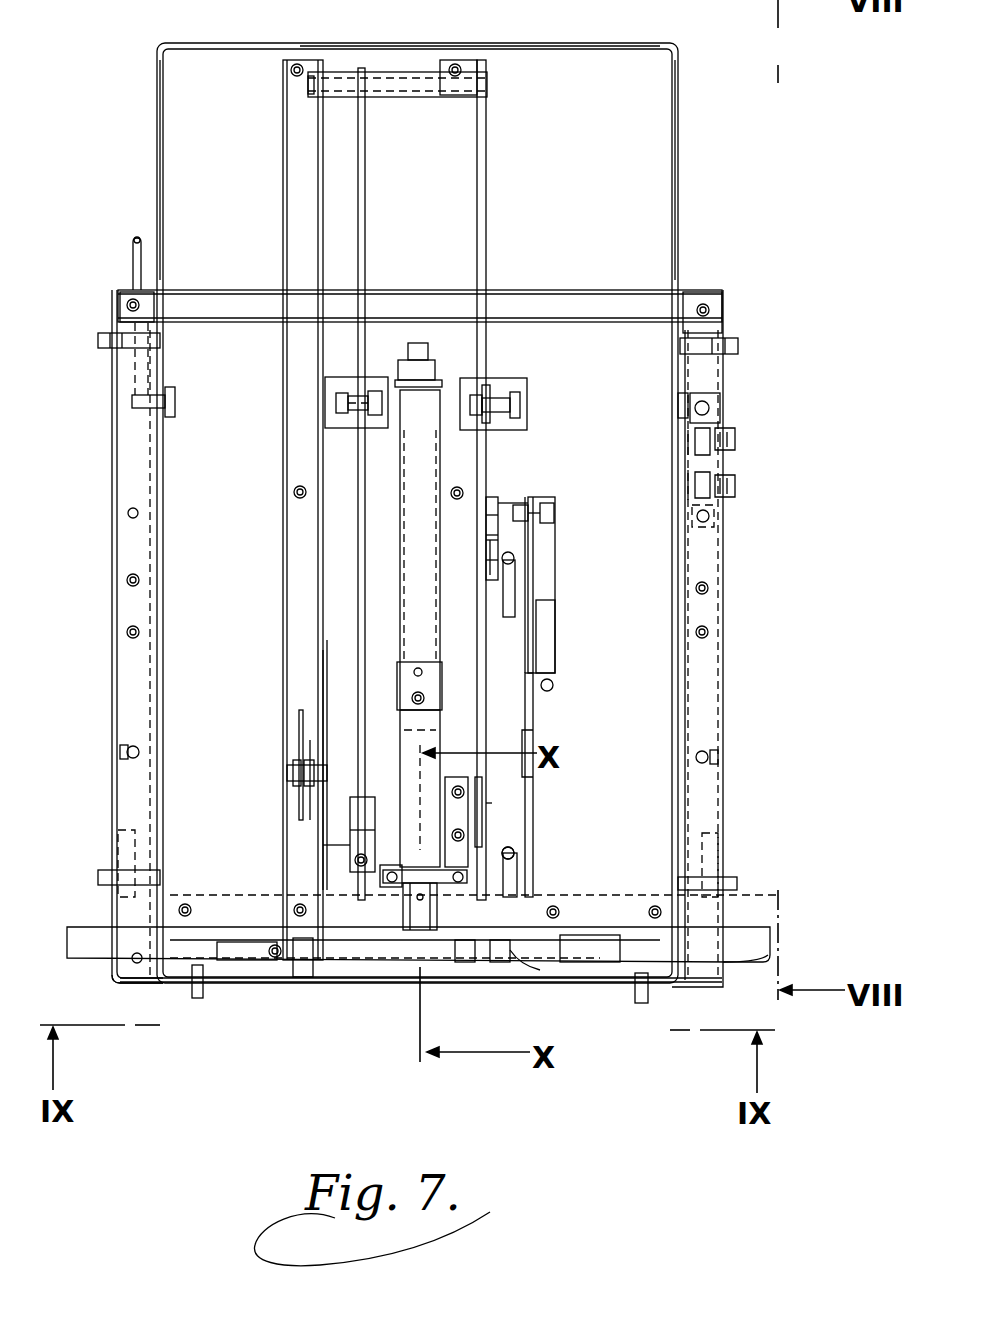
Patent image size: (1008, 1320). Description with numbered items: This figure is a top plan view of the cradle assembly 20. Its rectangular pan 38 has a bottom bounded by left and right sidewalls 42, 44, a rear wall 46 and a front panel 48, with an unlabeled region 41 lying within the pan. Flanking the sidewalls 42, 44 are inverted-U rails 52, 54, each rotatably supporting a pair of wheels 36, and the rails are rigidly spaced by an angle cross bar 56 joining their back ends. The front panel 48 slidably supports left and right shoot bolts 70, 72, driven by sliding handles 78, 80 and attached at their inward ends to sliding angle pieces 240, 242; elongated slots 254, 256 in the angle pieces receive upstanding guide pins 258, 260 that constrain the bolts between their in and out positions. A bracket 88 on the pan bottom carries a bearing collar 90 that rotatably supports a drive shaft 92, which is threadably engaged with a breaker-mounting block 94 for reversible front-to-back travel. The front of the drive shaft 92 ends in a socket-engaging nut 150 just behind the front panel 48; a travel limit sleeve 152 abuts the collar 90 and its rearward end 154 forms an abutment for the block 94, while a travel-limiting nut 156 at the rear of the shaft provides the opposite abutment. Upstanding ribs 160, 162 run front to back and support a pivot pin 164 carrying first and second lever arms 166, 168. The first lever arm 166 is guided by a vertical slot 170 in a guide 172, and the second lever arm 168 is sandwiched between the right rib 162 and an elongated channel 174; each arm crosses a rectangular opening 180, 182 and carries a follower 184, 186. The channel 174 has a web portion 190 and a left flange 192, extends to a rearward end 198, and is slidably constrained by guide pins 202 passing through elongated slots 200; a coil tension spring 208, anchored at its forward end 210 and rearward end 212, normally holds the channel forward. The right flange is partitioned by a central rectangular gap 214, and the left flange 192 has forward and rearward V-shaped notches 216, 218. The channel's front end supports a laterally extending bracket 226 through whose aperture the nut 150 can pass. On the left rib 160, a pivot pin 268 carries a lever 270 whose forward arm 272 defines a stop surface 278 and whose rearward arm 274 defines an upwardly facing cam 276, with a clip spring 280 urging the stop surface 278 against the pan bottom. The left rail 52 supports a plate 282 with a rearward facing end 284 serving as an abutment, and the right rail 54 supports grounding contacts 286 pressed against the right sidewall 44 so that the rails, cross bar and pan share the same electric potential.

The cradle assembly 20 is at (724, 181).
The wheels 36 is at (125, 823).
The rectangular pan 38 is at (668, 52).
The top panel 41 is at (585, 65).
The sidewall 42 is at (163, 141).
The sidewall 44 is at (672, 143).
The rear wall 46 is at (512, 48).
The front panel 48 is at (145, 985).
The rail 52 is at (112, 643).
The rail 54 is at (723, 643).
The angle cross bar 56 is at (540, 295).
The shoot bolt 70 is at (100, 950).
The shoot bolt 72 is at (745, 958).
The sliding handle 78 is at (195, 1000).
The sliding handle 80 is at (645, 1000).
The bracket 88 is at (458, 783).
The bearing collar 90 is at (385, 883).
The drive shaft 92 is at (412, 500).
The breaker-mounting block 94 is at (398, 668).
The socket-engaging nut 150 is at (428, 911).
The travel limit sleeve 152 is at (405, 755).
The rearward end 154 is at (415, 708).
The travel-limiting nut 156 is at (420, 368).
The rib 160 is at (318, 160).
The rib 162 is at (470, 146).
The pivot pin 164 is at (345, 75).
The first lever arm 166 is at (366, 226).
The second lever arm 168 is at (487, 165).
The vertical slot 170 is at (350, 845).
The guide 172 is at (366, 800).
The elongated channel 174 is at (556, 497).
The rectangular opening 180 is at (345, 383).
The rectangular opening 182 is at (520, 390).
The roller or follower 184 is at (371, 385).
The roller or follower 186 is at (493, 385).
The web portion 190 is at (533, 832).
The left upstanding flange 192 is at (498, 504).
The rearward end 198 is at (495, 497).
The elongated slots 200 is at (515, 590).
The guide pins 202 is at (514, 558).
The coil tension spring 208 is at (555, 620).
The forward end 210 is at (553, 686).
The rearward end 212 is at (554, 513).
The central rectangular gap 214 is at (533, 773).
The forward V-shaped notch 216 is at (487, 805).
The rearward V-shaped notch 218 is at (488, 536).
The bracket 226 is at (470, 972).
The sliding angle piece 240 is at (222, 935).
The sliding angle piece 242 is at (615, 985).
The elongated slot 254 is at (262, 940).
The elongated slot 256 is at (567, 935).
The guide pin 258 is at (275, 957).
The guide pin 260 is at (510, 965).
The pivot pin 268 is at (287, 770).
The lever 270 is at (320, 755).
The forward arm 272 is at (380, 875).
The rearward arm 274 is at (327, 705).
The cam 276 is at (323, 660).
The stop surface 278 is at (318, 978).
The clip spring 280 is at (300, 735).
The plate 282 is at (133, 262).
The rearward facing end 284 is at (135, 238).
The grounding contacts 286 is at (737, 433).